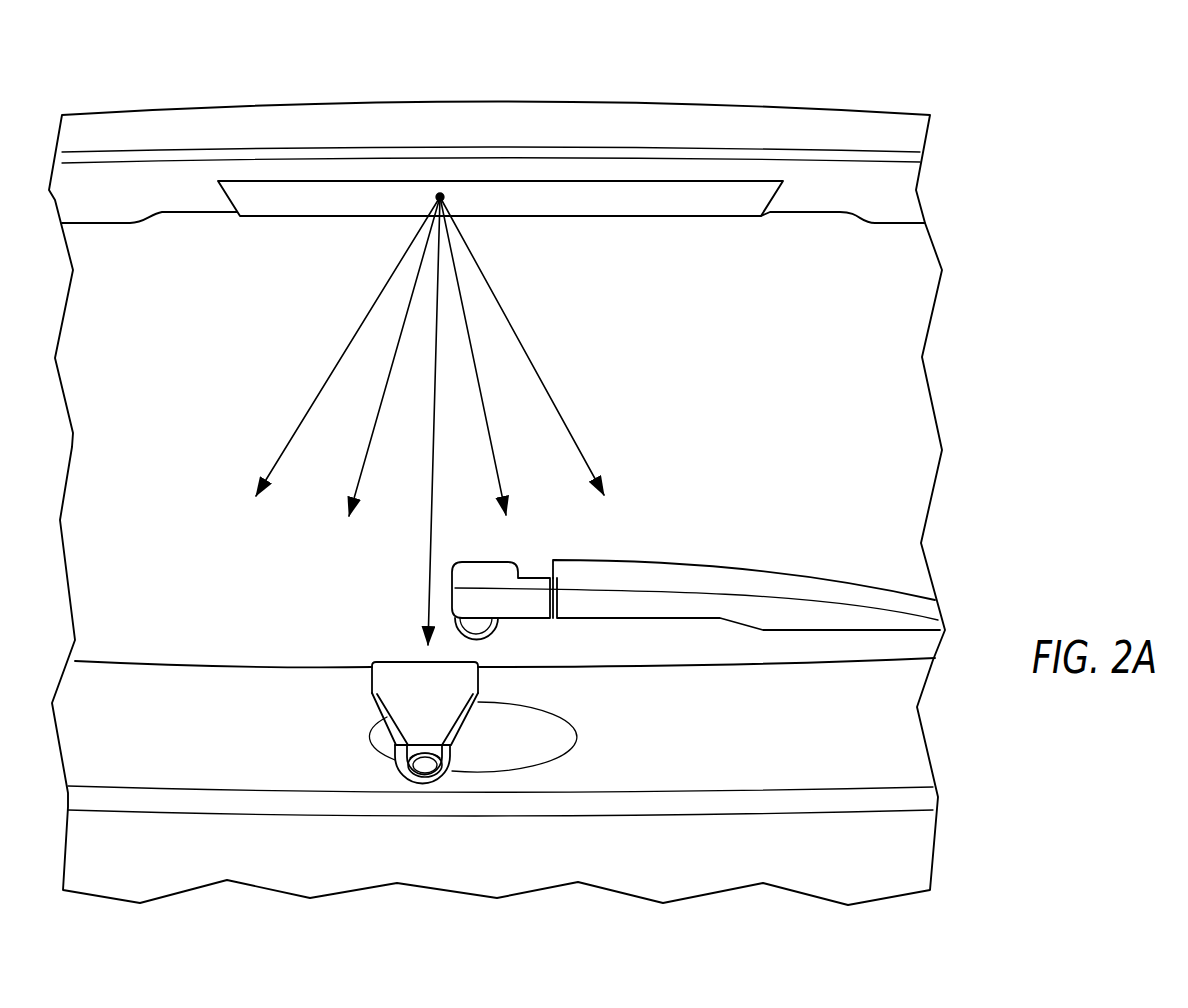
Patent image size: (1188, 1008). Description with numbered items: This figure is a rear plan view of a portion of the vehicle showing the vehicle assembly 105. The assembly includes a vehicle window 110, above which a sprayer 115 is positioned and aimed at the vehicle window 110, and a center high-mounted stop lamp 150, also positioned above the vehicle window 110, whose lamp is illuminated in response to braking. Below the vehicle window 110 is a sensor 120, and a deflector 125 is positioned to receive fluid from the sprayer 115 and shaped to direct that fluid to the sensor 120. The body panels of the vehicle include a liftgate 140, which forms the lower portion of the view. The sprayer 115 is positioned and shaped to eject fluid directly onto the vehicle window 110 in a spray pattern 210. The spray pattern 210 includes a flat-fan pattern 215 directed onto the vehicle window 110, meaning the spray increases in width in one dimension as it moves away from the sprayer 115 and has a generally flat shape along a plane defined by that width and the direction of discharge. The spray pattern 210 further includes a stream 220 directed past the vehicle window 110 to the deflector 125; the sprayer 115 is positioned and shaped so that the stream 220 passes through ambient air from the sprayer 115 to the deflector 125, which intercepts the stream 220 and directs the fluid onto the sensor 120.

The vehicle assembly 105 is at (834, 73).
The vehicle window 110 is at (843, 350).
The sprayer 115 is at (446, 194).
The sensor 120 is at (428, 772).
The deflector 125 is at (448, 682).
The liftgate 140 is at (883, 852).
The center high-mounted stop lamp 150 is at (692, 205).
The spray pattern 210 is at (210, 275).
The flat-fan pattern 215 is at (351, 289).
The stream 220 is at (431, 397).